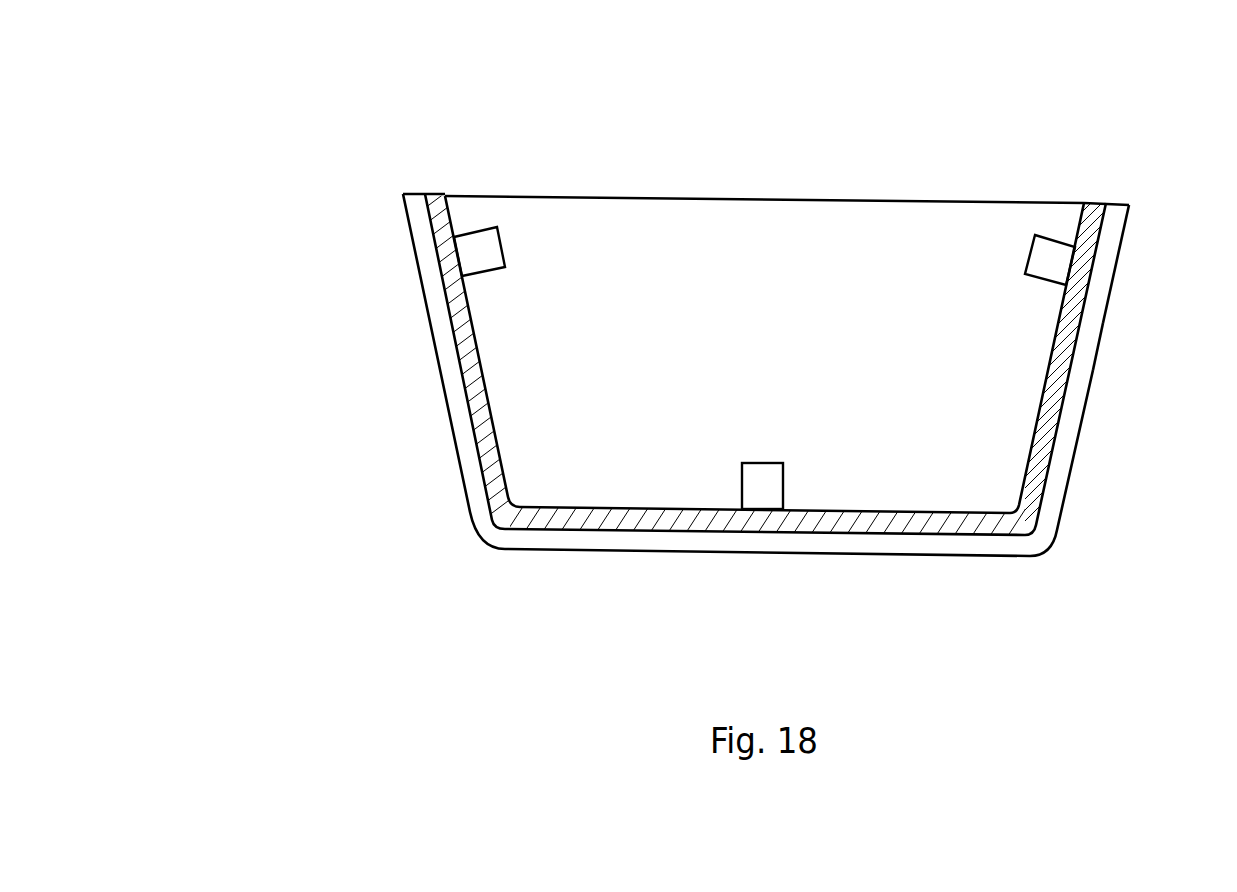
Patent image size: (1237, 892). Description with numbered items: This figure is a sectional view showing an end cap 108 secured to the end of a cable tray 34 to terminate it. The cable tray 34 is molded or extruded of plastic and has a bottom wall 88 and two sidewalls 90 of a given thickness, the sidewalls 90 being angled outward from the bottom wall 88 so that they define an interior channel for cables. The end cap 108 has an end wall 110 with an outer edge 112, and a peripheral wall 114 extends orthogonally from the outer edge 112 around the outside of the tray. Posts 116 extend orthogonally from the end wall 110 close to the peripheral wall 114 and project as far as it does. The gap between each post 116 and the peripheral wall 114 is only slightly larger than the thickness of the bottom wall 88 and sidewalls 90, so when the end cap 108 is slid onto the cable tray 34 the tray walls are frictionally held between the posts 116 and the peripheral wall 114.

The cable tray 34 is at (712, 350).
The bottom wall 88 is at (718, 517).
The sidewalls 90 is at (709, 397).
The end cap 108 is at (410, 235).
The end wall 110 is at (797, 328).
The outer edge 112 is at (1093, 370).
The peripheral wall 114 is at (1103, 267).
The posts 116 is at (492, 257).